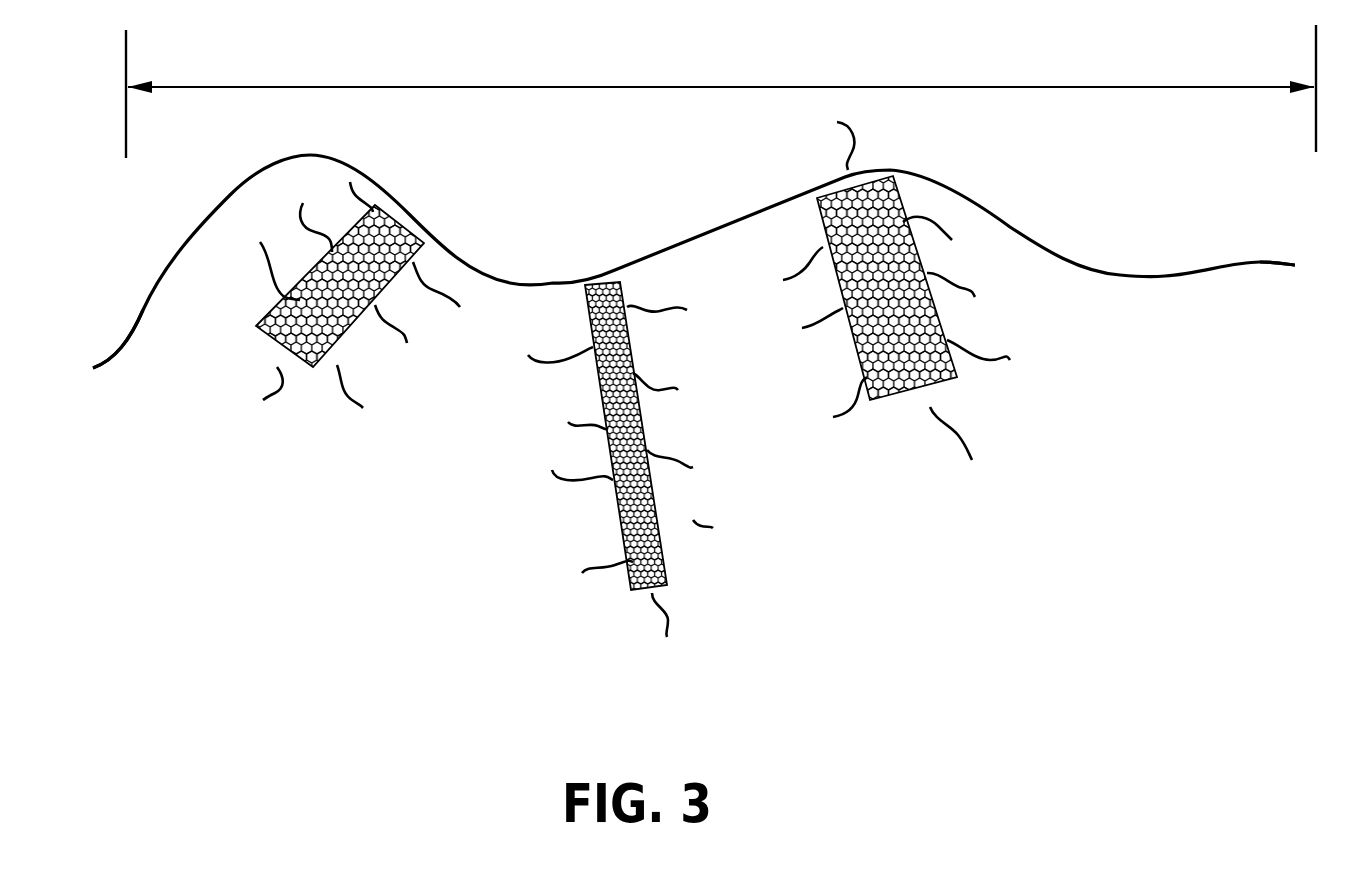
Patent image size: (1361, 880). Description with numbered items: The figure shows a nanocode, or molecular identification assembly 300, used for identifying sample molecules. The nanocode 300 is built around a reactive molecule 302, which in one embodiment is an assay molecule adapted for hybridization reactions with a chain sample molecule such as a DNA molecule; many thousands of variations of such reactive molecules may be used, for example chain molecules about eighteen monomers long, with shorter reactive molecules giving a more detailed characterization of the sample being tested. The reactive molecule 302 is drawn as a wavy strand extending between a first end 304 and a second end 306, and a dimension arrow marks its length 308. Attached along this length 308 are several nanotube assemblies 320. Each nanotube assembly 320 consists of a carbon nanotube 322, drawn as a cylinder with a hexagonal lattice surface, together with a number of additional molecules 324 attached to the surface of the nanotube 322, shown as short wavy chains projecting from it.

The nanocode 300 is at (262, 523).
The reactive molecule 302 is at (1217, 260).
The first end 304 is at (1295, 265).
The second end 306 is at (94, 368).
The length 308 is at (688, 87).
The nanotube assembly 320 is at (355, 343).
The carbon nanotube 322 is at (277, 318).
The additional molecules 324 is at (338, 377).